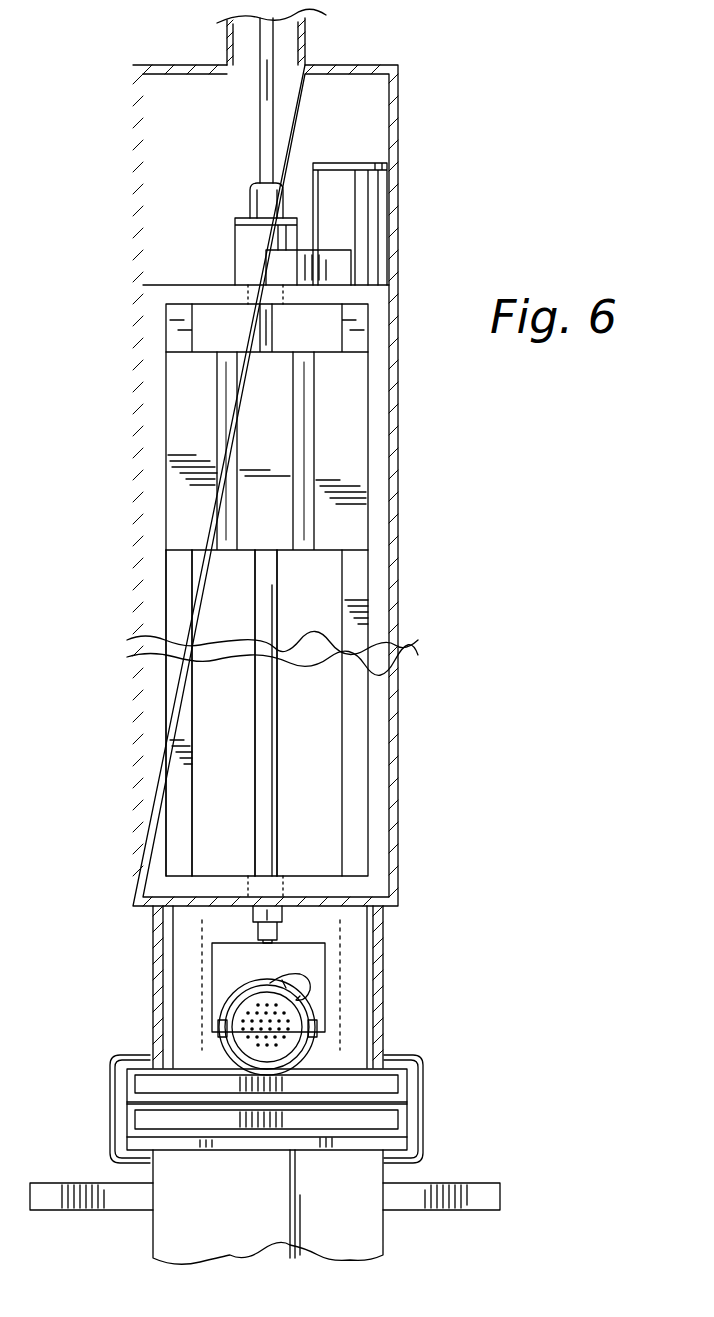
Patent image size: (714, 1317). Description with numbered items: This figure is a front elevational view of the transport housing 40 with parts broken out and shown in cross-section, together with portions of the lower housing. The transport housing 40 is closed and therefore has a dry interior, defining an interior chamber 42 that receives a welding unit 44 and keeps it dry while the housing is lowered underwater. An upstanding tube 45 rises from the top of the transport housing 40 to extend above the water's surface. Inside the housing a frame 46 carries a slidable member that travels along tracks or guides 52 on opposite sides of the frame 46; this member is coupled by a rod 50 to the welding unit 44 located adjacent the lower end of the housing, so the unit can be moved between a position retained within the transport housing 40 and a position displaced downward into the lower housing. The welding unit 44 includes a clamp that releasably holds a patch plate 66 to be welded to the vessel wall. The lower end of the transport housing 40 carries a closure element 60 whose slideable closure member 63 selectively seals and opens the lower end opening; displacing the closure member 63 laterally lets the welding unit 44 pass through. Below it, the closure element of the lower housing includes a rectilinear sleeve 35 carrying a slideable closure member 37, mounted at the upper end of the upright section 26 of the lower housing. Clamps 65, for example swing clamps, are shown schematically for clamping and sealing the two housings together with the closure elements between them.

The upright section 26 is at (187, 1232).
The sleeve 35 is at (400, 1135).
The closure member 37 is at (378, 1120).
The transport housing 40 is at (133, 213).
The interior chamber 42 is at (157, 413).
The welding unit 44 is at (237, 963).
The upstanding tube 45 is at (226, 43).
The frame 46 is at (368, 610).
The rod 50 is at (265, 753).
The tracks or guides 52 is at (180, 595).
The closure element 60 is at (337, 1068).
The closure member 63 is at (373, 1083).
The clamps 65 is at (118, 1087).
The patch plate 66 is at (267, 1045).